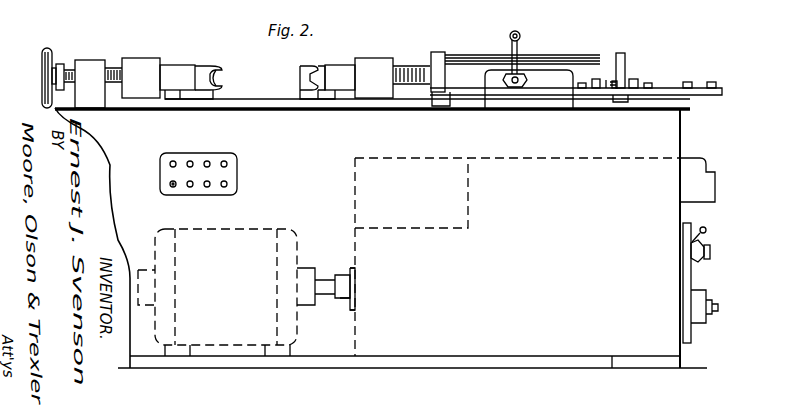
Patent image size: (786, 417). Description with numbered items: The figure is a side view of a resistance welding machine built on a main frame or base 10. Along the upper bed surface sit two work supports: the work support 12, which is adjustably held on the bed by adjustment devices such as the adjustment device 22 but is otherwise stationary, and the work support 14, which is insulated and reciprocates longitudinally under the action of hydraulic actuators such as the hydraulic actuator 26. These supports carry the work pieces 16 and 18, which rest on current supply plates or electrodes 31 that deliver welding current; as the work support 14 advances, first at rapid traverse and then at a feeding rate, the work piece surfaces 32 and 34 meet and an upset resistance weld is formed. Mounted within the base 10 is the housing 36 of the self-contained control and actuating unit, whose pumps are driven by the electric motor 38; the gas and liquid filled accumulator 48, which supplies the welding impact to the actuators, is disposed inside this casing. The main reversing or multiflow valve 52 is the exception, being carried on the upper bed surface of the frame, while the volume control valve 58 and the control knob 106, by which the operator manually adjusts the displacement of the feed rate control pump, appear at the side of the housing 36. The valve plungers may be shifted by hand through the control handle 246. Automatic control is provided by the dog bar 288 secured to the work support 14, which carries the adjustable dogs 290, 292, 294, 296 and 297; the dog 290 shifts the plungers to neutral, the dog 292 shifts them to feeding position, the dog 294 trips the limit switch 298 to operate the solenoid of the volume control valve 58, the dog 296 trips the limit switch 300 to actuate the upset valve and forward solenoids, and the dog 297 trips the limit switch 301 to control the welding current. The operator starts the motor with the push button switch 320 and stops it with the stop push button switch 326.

The main frame or base 10 is at (668, 338).
The work support 12 is at (136, 62).
The work support 14 is at (376, 62).
The work piece 16 is at (214, 66).
The work piece 18 is at (312, 58).
The adjustment device 22 is at (52, 50).
The hydraulic actuator 26 is at (459, 55).
The current supply plates or electrodes 31 is at (193, 100).
The work piece surface 32 is at (214, 70).
The work piece surface 34 is at (300, 80).
The housing 36 is at (550, 156).
The electric motor 38 is at (248, 238).
The accumulator 48 is at (355, 176).
The main reversing or multiflow valve 52 is at (540, 72).
The volume control valve 58 is at (705, 182).
The control knob 106 is at (706, 228).
The control handle 246 is at (500, 0).
The dog bar 288 is at (460, 99).
The dog 290 is at (530, 95).
The dog 292 is at (583, 90).
The dog 294 is at (686, 95).
The dog 296 is at (718, 95).
The dog 297 is at (650, 95).
The limit switch 298 is at (628, 80).
The limit switch 300 is at (630, 86).
The limit switch 301 is at (612, 80).
The push button switch 320 is at (170, 164).
The stop push button switch 326 is at (170, 184).